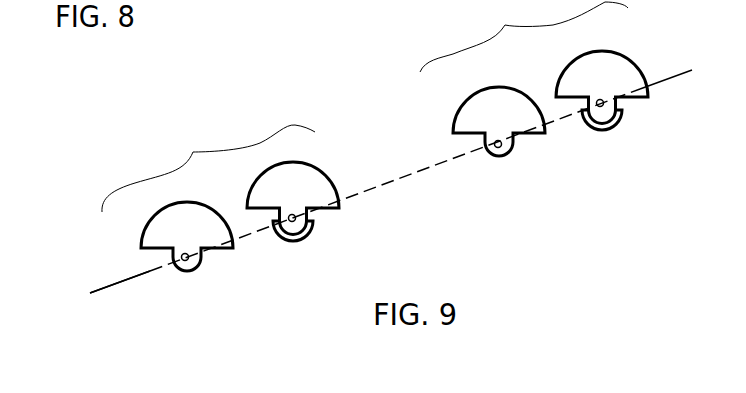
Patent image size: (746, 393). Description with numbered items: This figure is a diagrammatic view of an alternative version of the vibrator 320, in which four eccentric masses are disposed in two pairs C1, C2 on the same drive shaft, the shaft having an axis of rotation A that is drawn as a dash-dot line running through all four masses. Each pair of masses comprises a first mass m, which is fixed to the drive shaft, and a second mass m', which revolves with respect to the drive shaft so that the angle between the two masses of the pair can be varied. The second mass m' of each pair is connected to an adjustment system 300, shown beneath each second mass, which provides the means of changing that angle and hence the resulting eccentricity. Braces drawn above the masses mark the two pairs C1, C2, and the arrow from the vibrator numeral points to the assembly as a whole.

The vibrator 320 is at (323, 70).
The adjustment system 300 is at (277, 240).
The axis of rotation A is at (152, 301).
The first mass m is at (286, 179).
The second mass m' is at (470, 156).
The first pair of masses C1 is at (208, 162).
The second pair of masses C2 is at (524, 36).